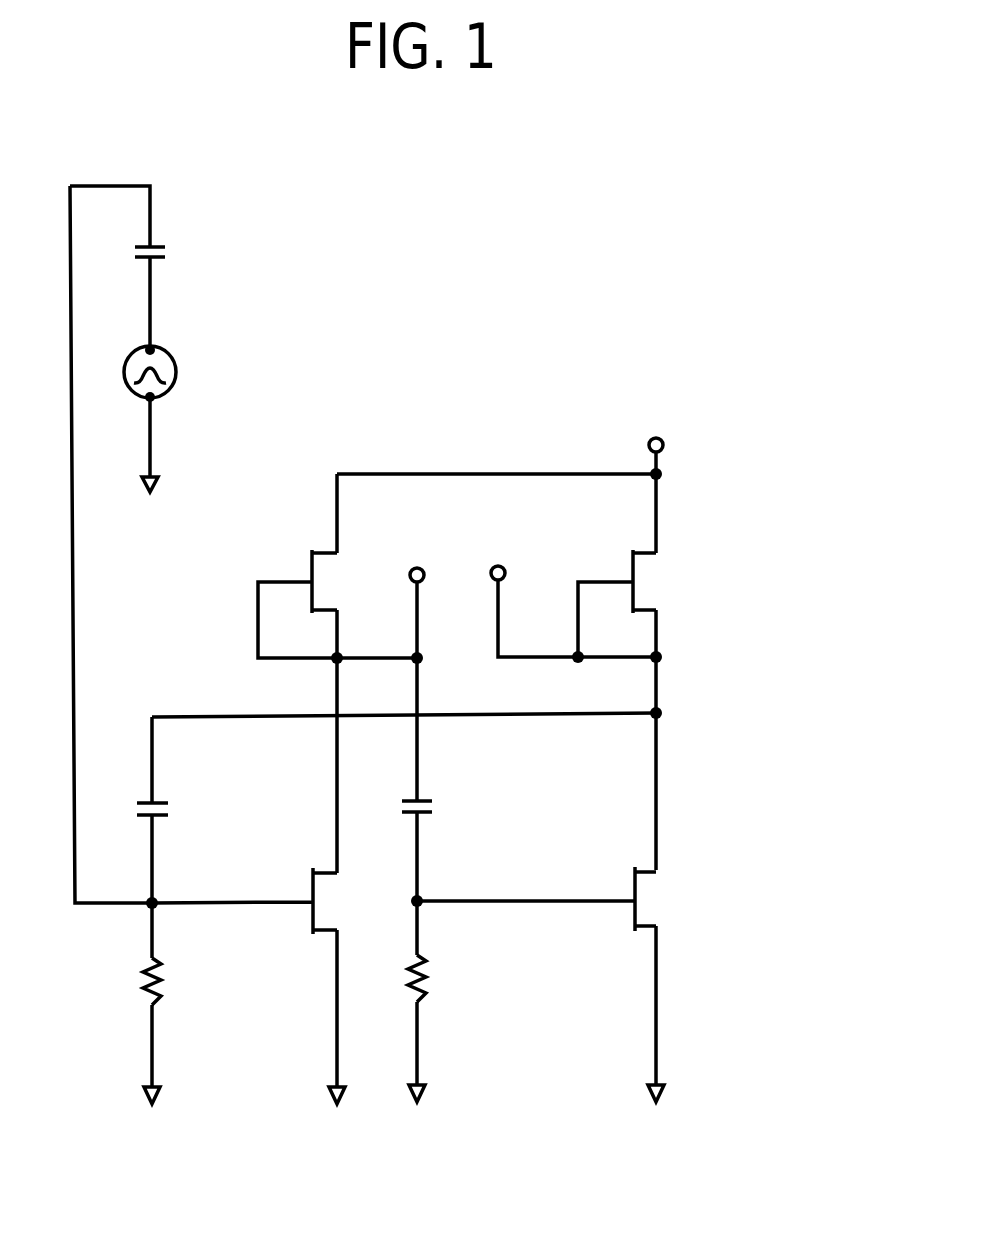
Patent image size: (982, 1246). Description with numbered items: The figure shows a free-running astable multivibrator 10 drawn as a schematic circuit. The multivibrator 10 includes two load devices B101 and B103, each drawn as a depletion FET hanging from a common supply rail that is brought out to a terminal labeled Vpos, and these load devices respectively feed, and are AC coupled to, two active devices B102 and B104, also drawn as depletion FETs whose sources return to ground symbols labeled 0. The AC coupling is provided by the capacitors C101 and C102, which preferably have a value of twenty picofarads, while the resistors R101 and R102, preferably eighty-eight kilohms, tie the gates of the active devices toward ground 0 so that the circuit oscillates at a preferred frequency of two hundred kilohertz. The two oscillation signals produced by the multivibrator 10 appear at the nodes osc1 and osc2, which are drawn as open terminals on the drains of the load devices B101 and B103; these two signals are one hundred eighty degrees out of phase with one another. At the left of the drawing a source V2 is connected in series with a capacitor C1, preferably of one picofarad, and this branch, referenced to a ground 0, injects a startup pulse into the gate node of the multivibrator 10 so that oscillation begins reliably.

The free-running astable multivibrator 10 is at (798, 548).
The capacitor C1 is at (174, 284).
The source V2 is at (169, 395).
The positive supply terminal Vpos is at (650, 468).
The load device B101 is at (333, 689).
The active device B102 is at (276, 957).
The load device B103 is at (643, 685).
The active device B104 is at (573, 954).
The node osc1 is at (412, 583).
The node osc2 is at (559, 585).
The capacitor C101 is at (190, 837).
The capacitor C102 is at (457, 806).
The resistor R101 is at (199, 1022).
The resistor R102 is at (462, 1019).
The ground 0 is at (417, 801).